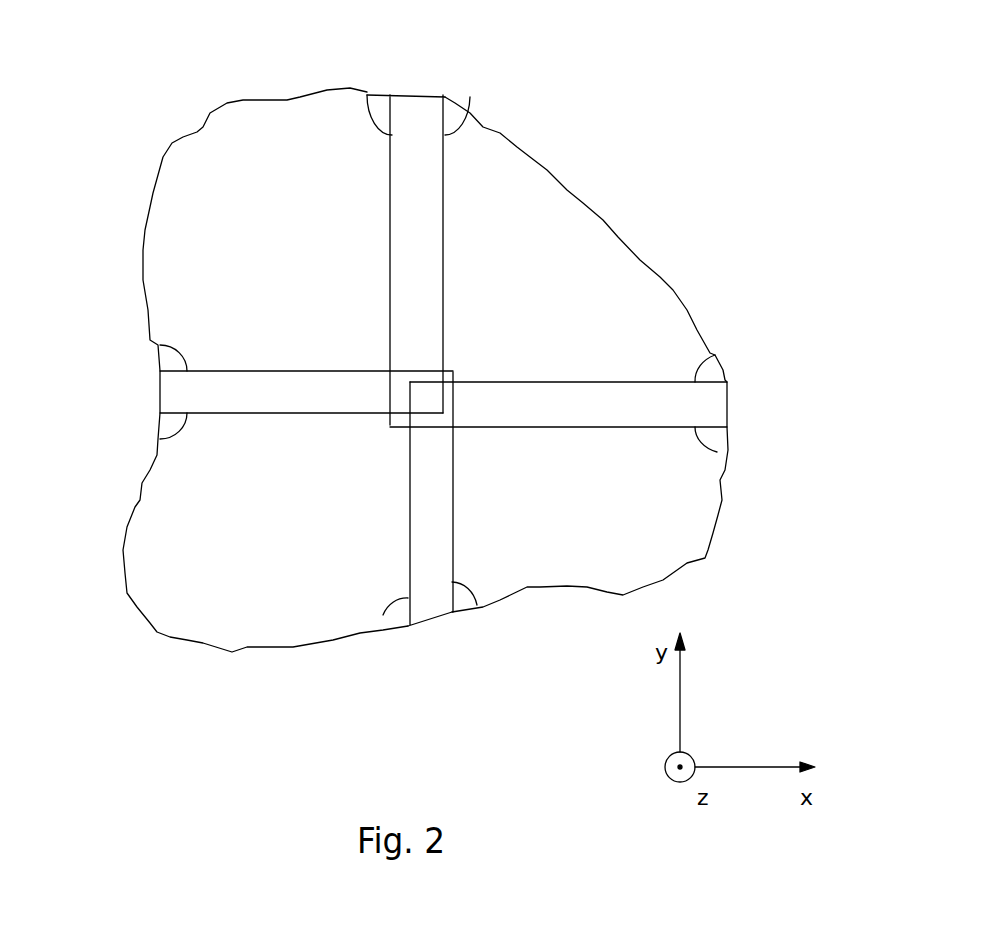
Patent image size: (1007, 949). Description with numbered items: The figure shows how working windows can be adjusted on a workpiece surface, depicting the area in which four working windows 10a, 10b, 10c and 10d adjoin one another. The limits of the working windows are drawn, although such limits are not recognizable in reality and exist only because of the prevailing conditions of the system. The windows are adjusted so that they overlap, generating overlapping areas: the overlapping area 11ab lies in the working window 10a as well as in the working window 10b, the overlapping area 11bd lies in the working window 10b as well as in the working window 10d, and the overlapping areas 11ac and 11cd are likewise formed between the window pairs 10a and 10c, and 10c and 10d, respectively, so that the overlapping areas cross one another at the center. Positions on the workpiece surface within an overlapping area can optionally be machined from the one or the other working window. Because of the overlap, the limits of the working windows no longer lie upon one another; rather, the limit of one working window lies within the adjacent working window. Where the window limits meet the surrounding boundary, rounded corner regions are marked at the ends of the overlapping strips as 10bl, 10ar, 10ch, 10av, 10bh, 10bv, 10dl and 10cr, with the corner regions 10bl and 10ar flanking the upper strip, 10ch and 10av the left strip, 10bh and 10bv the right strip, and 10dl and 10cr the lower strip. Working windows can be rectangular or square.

The working window 10a is at (205, 160).
The working window 10b is at (588, 235).
The working window 10c is at (175, 612).
The working window 10d is at (685, 523).
The overlapping area 11ab is at (418, 115).
The overlapping area 11ac is at (282, 390).
The overlapping area 11bd is at (707, 405).
The overlapping area 11cd is at (431, 598).
The rounded corner of region 10b at slit 11ab 10bl is at (368, 96).
The rounded corner of region 10a at slit 11ab 10ar is at (468, 112).
The rounded corner of region 10c at slit 11ac 10ch is at (160, 345).
The rounded corner of region 10a at slit 11ac 10av is at (160, 438).
The rounded corner of region 10b at slit 11bd 10bh is at (715, 354).
The rounded corner of region 10b at slit 11bd 10bv is at (717, 451).
The rounded corner of region 10d at slit 11cd 10dl is at (383, 613).
The rounded corner of region 10c at slit 11cd 10cr is at (477, 605).